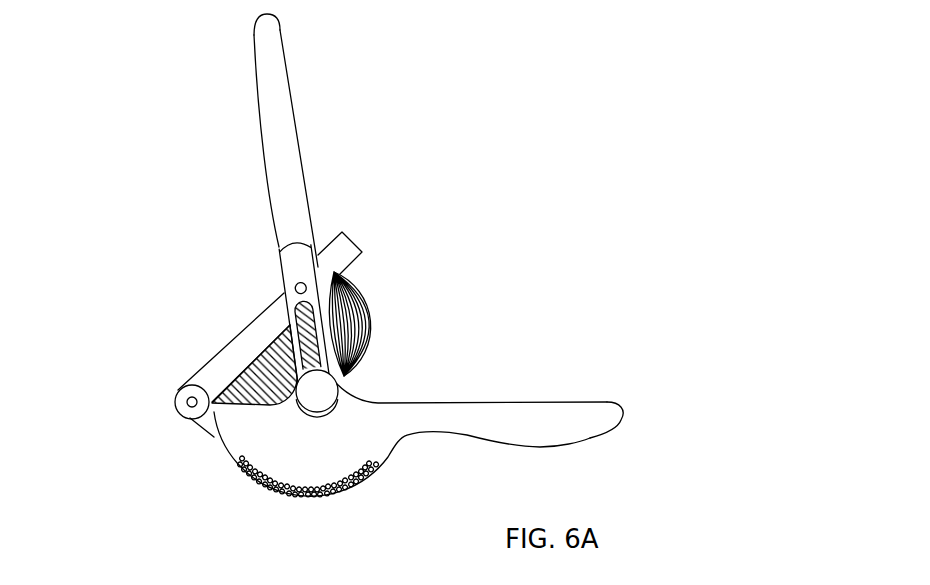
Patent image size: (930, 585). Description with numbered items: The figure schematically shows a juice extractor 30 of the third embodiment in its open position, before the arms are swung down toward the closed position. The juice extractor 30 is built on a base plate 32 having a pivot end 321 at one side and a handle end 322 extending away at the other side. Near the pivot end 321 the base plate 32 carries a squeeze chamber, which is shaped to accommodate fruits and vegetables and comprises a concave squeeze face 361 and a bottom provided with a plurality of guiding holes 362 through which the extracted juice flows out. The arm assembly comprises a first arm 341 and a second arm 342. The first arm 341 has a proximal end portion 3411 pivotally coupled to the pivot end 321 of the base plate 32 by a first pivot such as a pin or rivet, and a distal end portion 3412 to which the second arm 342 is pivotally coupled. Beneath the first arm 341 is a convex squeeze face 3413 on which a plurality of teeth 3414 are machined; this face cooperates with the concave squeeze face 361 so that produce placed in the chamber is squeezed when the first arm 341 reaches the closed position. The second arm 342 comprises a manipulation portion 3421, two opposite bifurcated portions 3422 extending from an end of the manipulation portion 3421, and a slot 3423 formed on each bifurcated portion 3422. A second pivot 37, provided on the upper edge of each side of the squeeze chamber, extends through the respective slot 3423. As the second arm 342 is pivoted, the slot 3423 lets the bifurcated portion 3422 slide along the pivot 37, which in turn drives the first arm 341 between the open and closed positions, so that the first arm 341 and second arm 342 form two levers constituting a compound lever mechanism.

The juice extractor 30 is at (612, 232).
The base plate 32 is at (447, 422).
The pivot end 321 is at (209, 420).
The handle end 322 is at (592, 417).
The first arm 341 is at (262, 330).
The proximal end portion 3411 is at (193, 385).
The distal end portion 3412 is at (337, 258).
The convex squeeze face 3413 is at (360, 273).
The teeth 3414 is at (240, 372).
The second arm 342 is at (280, 150).
The manipulation portion 3421 is at (267, 98).
The bifurcated portion 3422 is at (298, 270).
The slot 3423 is at (317, 322).
The concave squeeze face 361 is at (270, 447).
The guiding holes 362 is at (300, 493).
The second pivot 37 is at (360, 367).